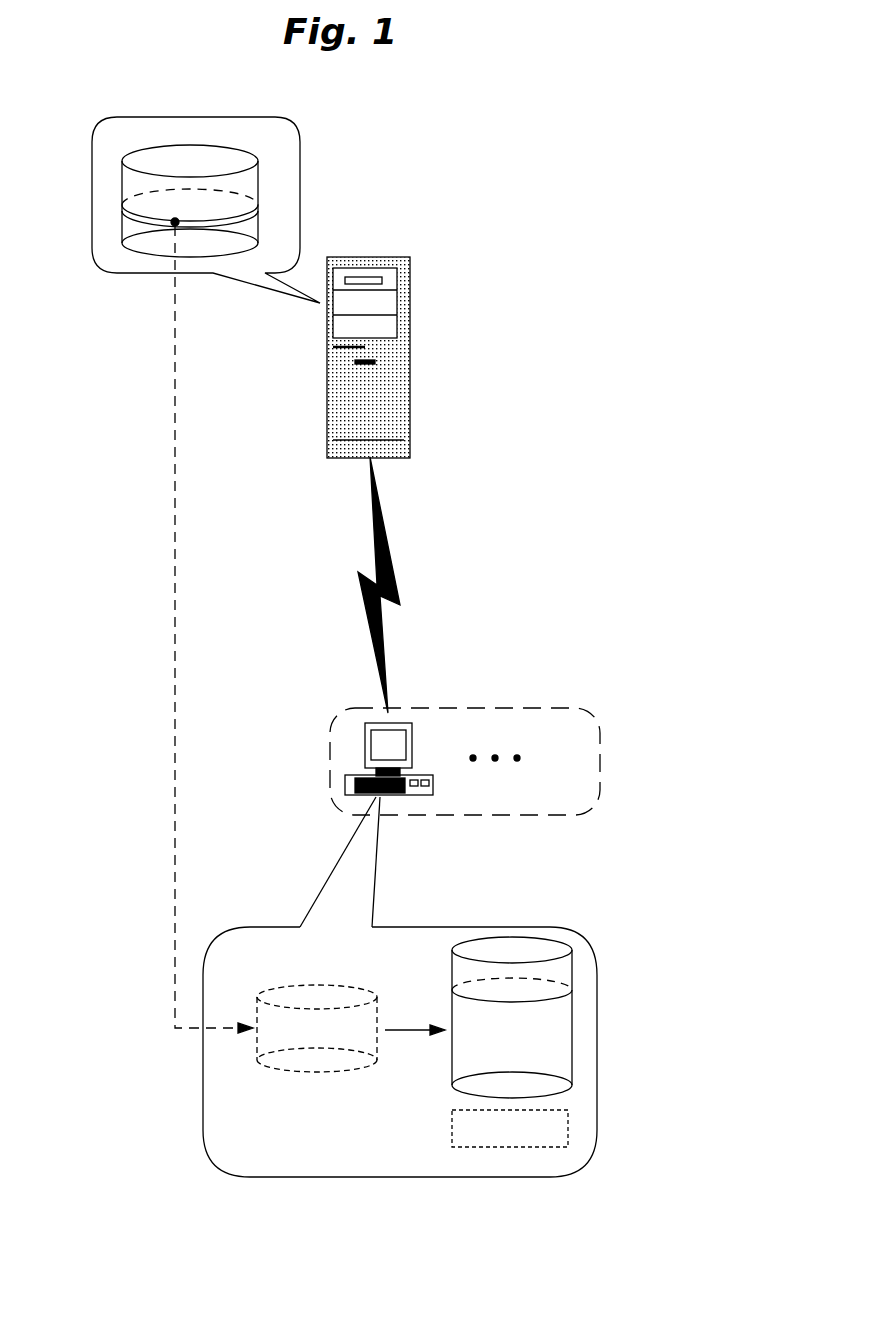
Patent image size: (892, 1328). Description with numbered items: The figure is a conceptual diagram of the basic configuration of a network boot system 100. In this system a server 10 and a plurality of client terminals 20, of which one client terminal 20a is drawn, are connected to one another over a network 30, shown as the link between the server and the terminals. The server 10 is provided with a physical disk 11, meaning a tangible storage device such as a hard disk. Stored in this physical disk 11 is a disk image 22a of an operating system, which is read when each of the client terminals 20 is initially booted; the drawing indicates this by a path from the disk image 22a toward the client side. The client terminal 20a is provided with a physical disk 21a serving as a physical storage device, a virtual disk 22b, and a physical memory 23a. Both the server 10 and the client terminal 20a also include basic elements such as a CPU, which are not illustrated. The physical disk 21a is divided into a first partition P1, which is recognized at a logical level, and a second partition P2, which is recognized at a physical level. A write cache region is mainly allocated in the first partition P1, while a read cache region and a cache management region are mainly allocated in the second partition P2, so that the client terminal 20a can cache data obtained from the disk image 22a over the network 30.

The physical disk 11 is at (168, 157).
The disk image 22a is at (173, 224).
The server 10 is at (410, 288).
The network 30 is at (400, 592).
The client terminals 20 is at (512, 784).
The client terminal 20a is at (407, 792).
The physical disk 21a is at (562, 1002).
The first partition P1 is at (558, 973).
The second partition P2 is at (558, 1033).
The virtual disk 22b is at (307, 1073).
The physical memory 23a is at (568, 1125).
The network boot system 100 is at (667, 1162).